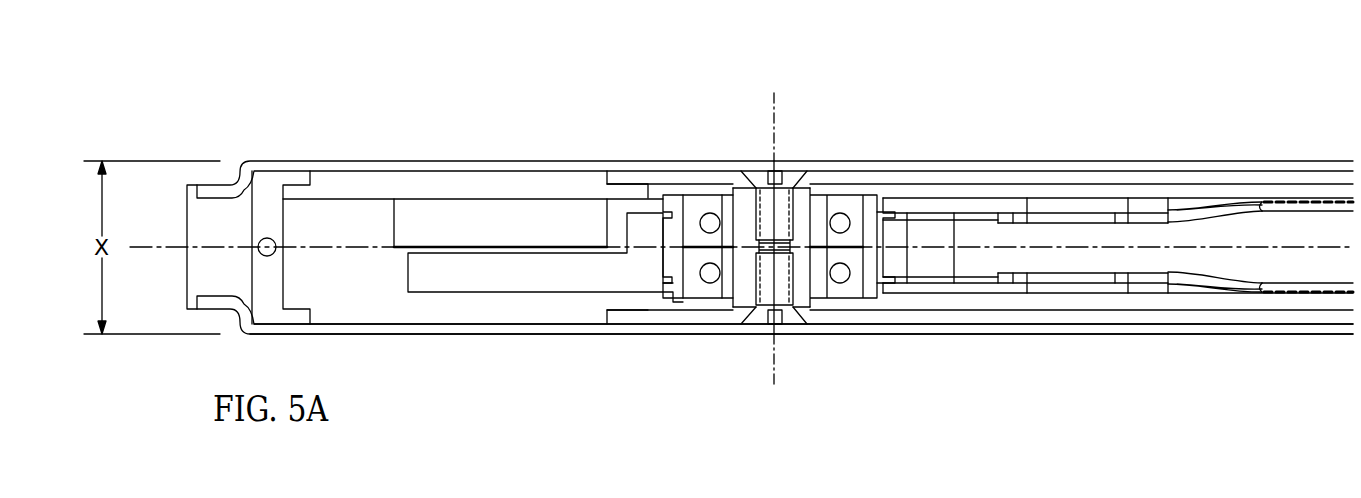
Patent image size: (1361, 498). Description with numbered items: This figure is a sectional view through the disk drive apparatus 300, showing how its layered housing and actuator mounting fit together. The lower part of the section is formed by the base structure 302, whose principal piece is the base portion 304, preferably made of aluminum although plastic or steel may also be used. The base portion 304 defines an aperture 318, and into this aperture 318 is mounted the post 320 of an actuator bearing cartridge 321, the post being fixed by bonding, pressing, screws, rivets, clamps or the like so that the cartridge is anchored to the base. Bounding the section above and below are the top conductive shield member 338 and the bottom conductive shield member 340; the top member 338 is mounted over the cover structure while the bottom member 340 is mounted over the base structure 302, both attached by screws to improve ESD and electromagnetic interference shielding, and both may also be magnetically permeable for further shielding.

The disk drive apparatus 300 is at (619, 82).
The base structure 302 is at (1147, 316).
The base portion 304 is at (1232, 315).
The aperture 318 is at (793, 290).
The post 320 is at (779, 196).
The actuator bearing cartridge 321 is at (805, 163).
The top conductive shield member 338 is at (1083, 161).
The bottom conductive shield member 340 is at (1002, 329).